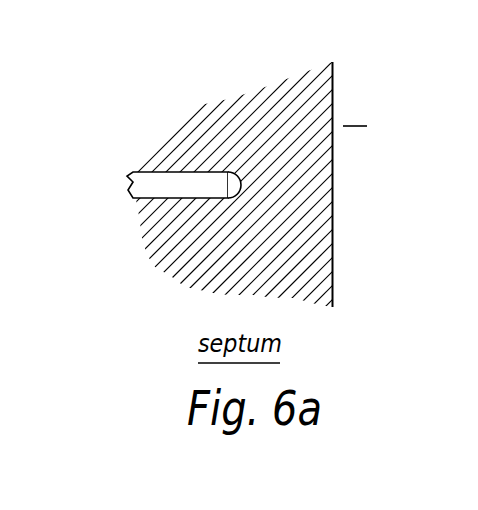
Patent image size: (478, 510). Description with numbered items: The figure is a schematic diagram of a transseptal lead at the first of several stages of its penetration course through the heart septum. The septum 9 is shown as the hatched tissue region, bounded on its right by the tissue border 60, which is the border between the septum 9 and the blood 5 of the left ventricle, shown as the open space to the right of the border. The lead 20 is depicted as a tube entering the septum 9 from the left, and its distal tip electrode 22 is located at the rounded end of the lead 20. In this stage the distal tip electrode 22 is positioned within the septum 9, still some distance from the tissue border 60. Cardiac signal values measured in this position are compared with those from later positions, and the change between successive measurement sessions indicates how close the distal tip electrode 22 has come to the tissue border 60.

The blood 5 is at (358, 173).
The septum 9 is at (318, 94).
The lead 20 is at (170, 178).
The distal tip electrode 22 is at (238, 182).
The tissue border 60 is at (333, 270).